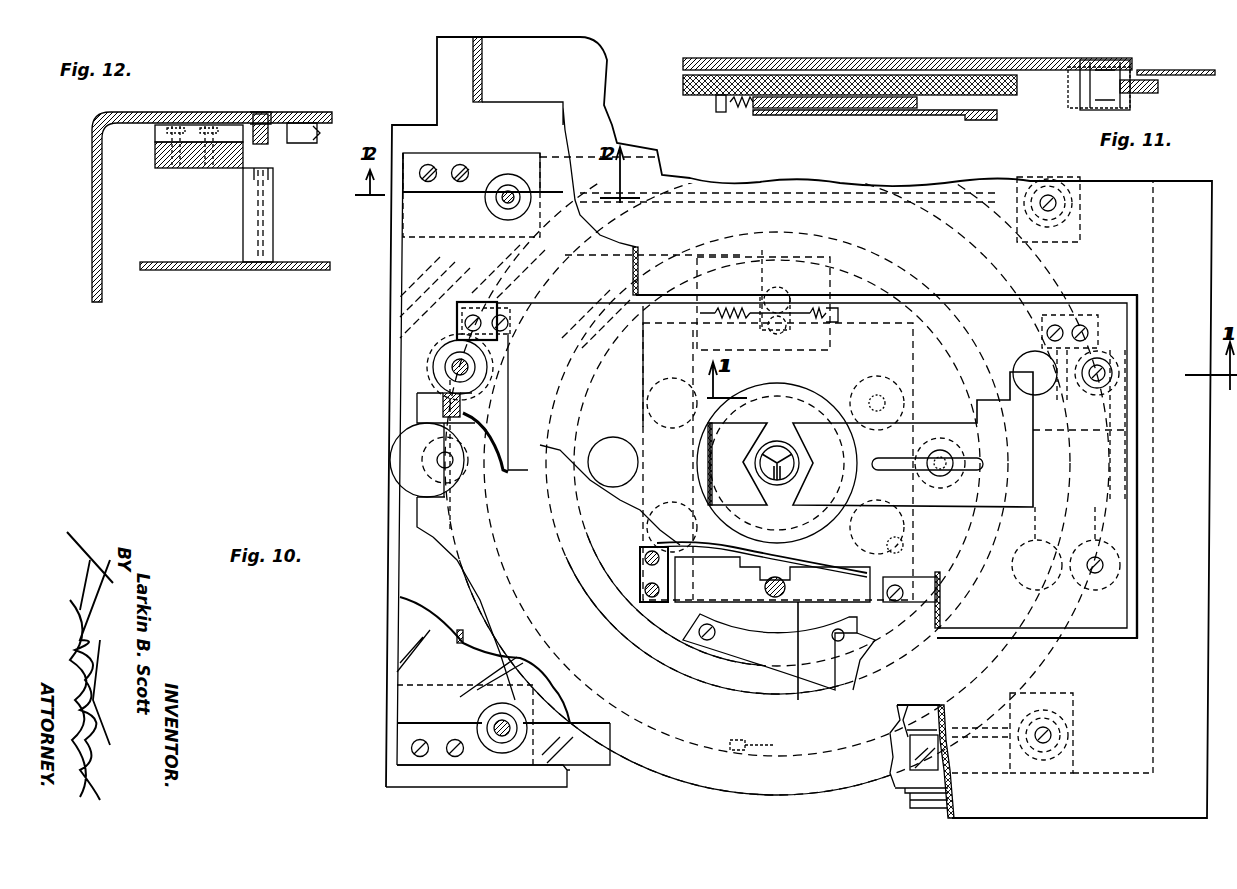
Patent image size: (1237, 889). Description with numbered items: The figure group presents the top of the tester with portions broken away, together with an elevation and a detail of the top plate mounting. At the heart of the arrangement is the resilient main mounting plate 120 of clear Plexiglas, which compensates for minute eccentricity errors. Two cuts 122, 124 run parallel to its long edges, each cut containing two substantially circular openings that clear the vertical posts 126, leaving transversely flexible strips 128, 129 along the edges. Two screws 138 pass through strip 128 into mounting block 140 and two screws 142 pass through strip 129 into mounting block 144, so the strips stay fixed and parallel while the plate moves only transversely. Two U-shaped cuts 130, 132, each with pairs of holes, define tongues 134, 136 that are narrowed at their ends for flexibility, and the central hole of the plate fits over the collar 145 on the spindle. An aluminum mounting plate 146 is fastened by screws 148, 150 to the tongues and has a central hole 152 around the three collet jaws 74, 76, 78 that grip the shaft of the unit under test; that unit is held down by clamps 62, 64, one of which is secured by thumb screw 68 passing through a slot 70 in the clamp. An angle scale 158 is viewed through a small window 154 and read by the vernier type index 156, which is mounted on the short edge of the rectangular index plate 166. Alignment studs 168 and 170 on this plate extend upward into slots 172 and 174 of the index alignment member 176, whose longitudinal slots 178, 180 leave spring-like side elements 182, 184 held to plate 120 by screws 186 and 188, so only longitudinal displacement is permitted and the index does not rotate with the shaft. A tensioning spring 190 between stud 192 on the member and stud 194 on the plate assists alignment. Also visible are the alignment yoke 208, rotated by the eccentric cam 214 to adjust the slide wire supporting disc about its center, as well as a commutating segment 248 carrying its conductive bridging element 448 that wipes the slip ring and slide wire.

In FIG. 10, the clamp 62 is at (722, 420).
In FIG. 10, the clamp 64 is at (930, 428).
In FIG. 10, the thumb screw 68 is at (900, 540).
In FIG. 10, the slot 70 is at (962, 470).
In FIG. 10, the collet jaw 74 is at (795, 470).
In FIG. 10, the collet jaw 76 is at (765, 470).
In FIG. 10, the collet jaw 78 is at (785, 452).
In FIG. 11, the main mounting plate 120 is at (772, 78).
In FIG. 10, the main mounting plate 120 is at (415, 322).
In FIG. 10, the cut 122 is at (445, 197).
In FIG. 10, the cut 124 is at (400, 728).
In FIG. 12, the vertical post 126 is at (248, 230).
In FIG. 10, the vertical post 126 is at (508, 190).
In FIG. 12, the strip 128 is at (300, 118).
In FIG. 10, the strip 128 is at (570, 163).
In FIG. 10, the strip 129 is at (592, 768).
In FIG. 10, the U-shaped cut 130 is at (1100, 452).
In FIG. 10, the U-shaped cut 132 is at (450, 383).
In FIG. 10, the tongue 134 is at (1105, 395).
In FIG. 10, the tongue 136 is at (452, 418).
In FIG. 12, the screw 138 is at (240, 110).
In FIG. 10, the screw 138 is at (462, 164).
In FIG. 12, the mounting block 140 is at (160, 166).
In FIG. 10, the mounting block 140 is at (458, 230).
In FIG. 10, the screw 142 is at (455, 760).
In FIG. 10, the mounting block 144 is at (410, 660).
In FIG. 10, the collar 145 is at (840, 420).
In FIG. 11, the mounting plate 146 is at (898, 60).
In FIG. 10, the mounting plate 146 is at (1130, 512).
In FIG. 11, the screw 148 is at (1090, 72).
In FIG. 10, the screw 148 is at (1082, 325).
In FIG. 10, the screw 150 is at (502, 312).
In FIG. 10, the central hole 152 is at (826, 398).
In FIG. 10, the window 154 is at (852, 660).
In FIG. 10, the vernier type index 156 is at (702, 700).
In FIG. 10, the angle scale 158 is at (748, 730).
In FIG. 10, the index plate 166 is at (665, 660).
In FIG. 10, the alignment stud 168 is at (803, 562).
In FIG. 10, the alignment stud 170 is at (795, 335).
In FIG. 10, the slot 172 is at (772, 685).
In FIG. 10, the slot 174 is at (763, 250).
In FIG. 10, the index alignment member 176 is at (630, 642).
In FIG. 10, the longitudinal slot 178 is at (640, 575).
In FIG. 10, the longitudinal slot 180 is at (937, 592).
In FIG. 10, the side element 182 is at (640, 552).
In FIG. 10, the side element 184 is at (925, 585).
In FIG. 10, the screw 186 is at (945, 606).
In FIG. 10, the screw 188 is at (625, 568).
In FIG. 11, the tensioning spring 190 is at (742, 108).
In FIG. 10, the tensioning spring 190 is at (822, 300).
In FIG. 11, the stud 192 is at (828, 112).
In FIG. 10, the stud 192 is at (880, 280).
In FIG. 11, the stud 194 is at (716, 110).
In FIG. 10, the stud 194 is at (735, 255).
In FIG. 10, the alignment yoke 208 is at (438, 540).
In FIG. 10, the eccentric cam 214 is at (405, 456).
In FIG. 10, the commutating segment 248 is at (803, 790).
In FIG. 10, the bridging element 448 is at (683, 775).